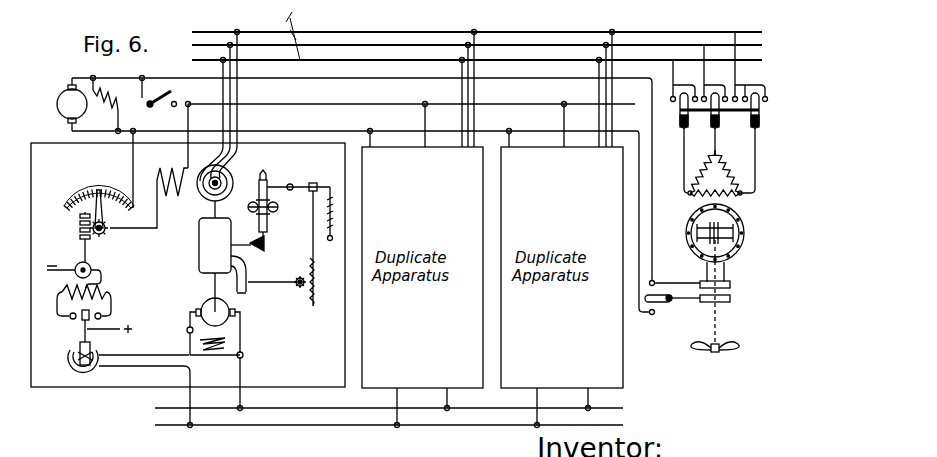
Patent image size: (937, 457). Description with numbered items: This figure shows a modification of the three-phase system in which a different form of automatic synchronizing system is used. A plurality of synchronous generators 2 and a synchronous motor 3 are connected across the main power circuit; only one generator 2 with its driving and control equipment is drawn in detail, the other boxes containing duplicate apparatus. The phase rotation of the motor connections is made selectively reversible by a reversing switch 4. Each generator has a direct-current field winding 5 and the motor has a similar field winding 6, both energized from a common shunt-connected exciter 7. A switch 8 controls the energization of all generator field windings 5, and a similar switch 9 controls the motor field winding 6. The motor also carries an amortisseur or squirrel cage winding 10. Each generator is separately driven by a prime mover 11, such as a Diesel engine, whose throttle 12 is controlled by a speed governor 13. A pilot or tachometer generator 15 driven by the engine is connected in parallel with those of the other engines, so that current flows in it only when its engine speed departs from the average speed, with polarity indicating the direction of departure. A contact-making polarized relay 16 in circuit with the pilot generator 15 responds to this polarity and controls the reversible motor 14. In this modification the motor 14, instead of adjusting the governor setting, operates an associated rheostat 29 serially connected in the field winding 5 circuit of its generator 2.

The synchronous generator 2 is at (226, 201).
The synchronous motor 3 is at (718, 276).
The reversing switch 4 is at (760, 110).
The direct-current field winding 5 is at (176, 172).
The field winding 6 is at (705, 229).
The shunt-connected exciter 7 is at (72, 104).
The switch 8 is at (166, 102).
The switch 9 is at (655, 313).
The amortisseur winding 10 is at (739, 249).
The prime mover 11 is at (199, 233).
The throttle 12 is at (254, 268).
The speed governor 13 is at (279, 207).
The reversible motor 14 is at (89, 268).
The pilot generator 15 is at (187, 309).
The polarized relay 16 is at (70, 352).
The rheostat 29 is at (108, 183).